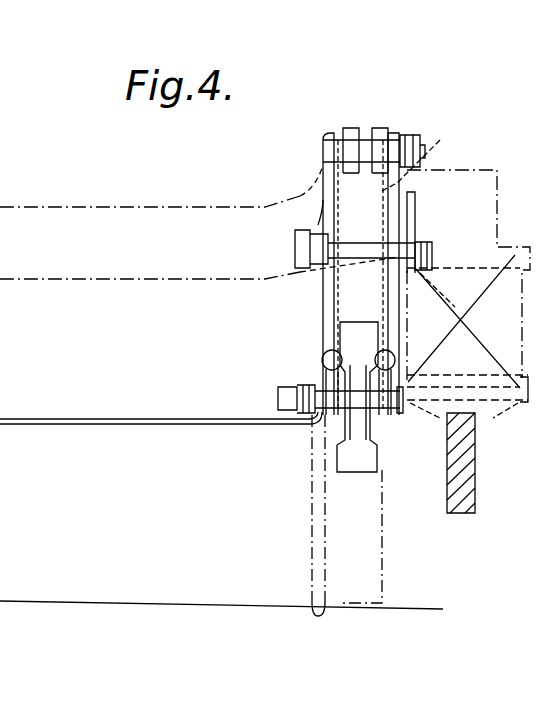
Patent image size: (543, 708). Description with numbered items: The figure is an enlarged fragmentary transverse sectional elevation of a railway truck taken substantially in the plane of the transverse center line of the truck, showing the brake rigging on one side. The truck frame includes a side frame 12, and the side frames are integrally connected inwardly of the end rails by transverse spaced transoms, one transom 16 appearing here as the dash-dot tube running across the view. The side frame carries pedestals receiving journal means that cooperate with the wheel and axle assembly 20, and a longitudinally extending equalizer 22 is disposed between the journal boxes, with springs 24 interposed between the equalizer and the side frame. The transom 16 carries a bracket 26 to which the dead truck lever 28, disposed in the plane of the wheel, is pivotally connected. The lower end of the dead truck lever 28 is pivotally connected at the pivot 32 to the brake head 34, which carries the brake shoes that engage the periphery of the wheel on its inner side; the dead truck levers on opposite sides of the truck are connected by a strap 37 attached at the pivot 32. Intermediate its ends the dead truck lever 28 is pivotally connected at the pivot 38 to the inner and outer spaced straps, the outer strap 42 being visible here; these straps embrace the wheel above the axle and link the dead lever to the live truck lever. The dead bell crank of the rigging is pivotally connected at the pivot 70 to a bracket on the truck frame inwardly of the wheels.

The side frame 12 is at (488, 203).
The transom 16 is at (163, 188).
The wheel and axle assembly 20 is at (385, 560).
The equalizer 22 is at (468, 488).
The springs 24 is at (463, 321).
The bracket 26 is at (380, 130).
The dead truck lever 28 is at (420, 157).
The pivot 32 is at (292, 385).
The brake head 34 is at (337, 456).
The strap 37 is at (146, 425).
The pivot 38 is at (296, 246).
The outer strap 42 is at (415, 197).
The pivot 70 is at (305, 225).